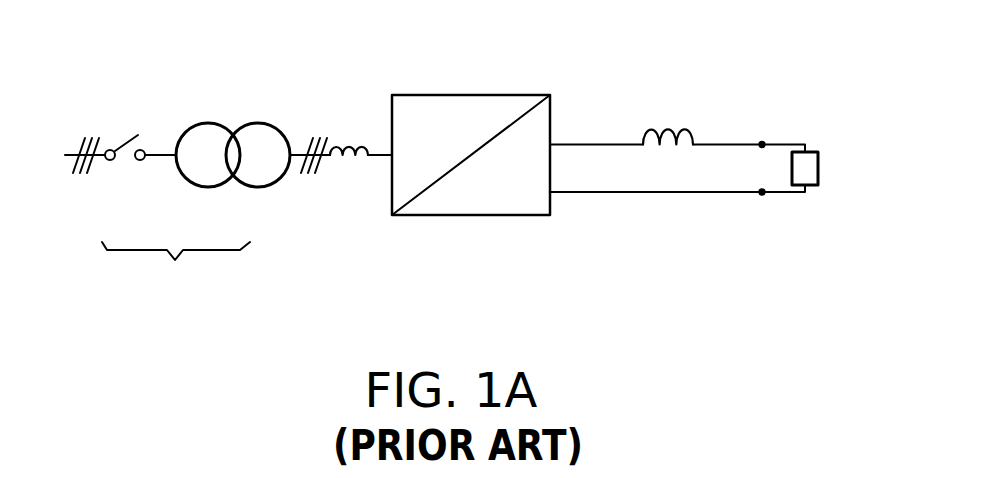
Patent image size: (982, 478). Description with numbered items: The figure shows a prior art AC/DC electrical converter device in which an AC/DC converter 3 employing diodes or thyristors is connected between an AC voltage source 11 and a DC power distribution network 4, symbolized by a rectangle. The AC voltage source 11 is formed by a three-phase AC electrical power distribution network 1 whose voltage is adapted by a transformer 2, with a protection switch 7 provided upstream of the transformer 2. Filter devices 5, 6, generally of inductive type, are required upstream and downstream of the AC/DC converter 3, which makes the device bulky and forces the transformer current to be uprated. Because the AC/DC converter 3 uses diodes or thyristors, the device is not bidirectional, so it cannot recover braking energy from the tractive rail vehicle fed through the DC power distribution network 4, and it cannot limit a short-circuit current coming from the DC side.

The AC electrical power distribution network 1 is at (88, 167).
The protection switch 7 is at (118, 143).
The transformer 2 is at (257, 170).
The AC voltage source 11 is at (197, 184).
The filter device 5 is at (350, 141).
The AC/DC converter 3 is at (465, 203).
The filter device 6 is at (673, 130).
The DC power distribution network 4 is at (807, 177).